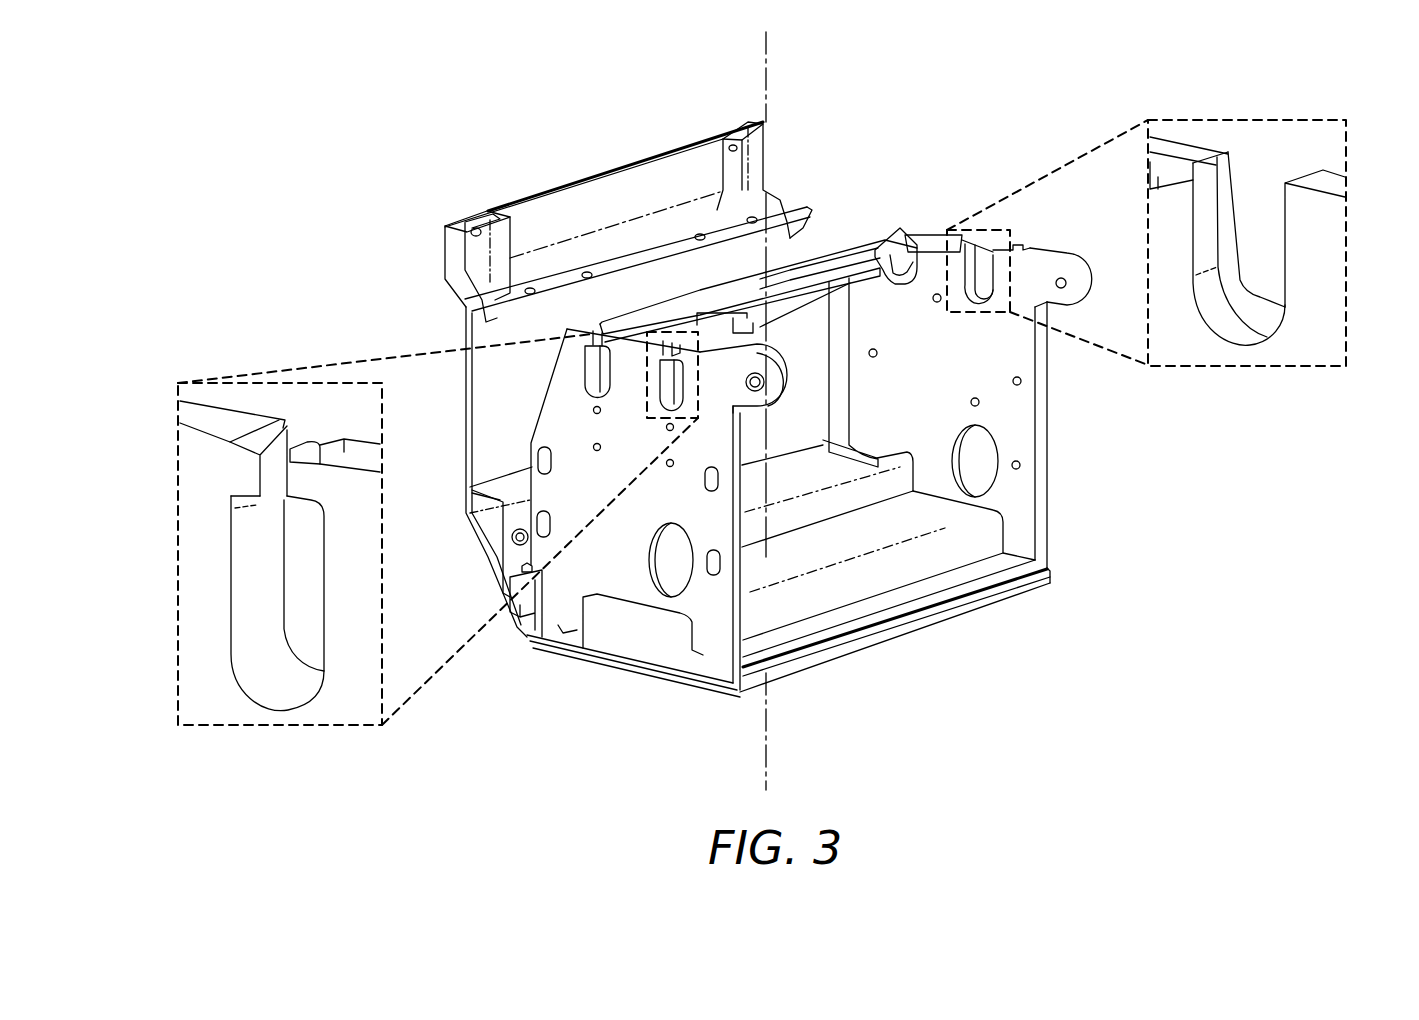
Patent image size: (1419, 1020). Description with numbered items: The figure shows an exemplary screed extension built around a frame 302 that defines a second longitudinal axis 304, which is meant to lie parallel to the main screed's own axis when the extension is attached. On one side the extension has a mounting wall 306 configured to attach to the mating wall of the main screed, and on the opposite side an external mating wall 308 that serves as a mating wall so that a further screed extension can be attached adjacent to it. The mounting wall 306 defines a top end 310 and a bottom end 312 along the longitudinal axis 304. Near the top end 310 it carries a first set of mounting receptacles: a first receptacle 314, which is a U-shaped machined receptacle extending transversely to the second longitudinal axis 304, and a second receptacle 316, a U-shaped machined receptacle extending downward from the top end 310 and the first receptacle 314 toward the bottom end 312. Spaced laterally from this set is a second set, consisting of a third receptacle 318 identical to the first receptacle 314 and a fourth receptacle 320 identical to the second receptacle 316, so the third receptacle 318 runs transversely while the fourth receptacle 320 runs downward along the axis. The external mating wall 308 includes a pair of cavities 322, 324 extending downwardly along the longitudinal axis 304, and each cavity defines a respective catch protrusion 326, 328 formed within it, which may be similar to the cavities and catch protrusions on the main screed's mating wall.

The frame 302 is at (855, 253).
The second longitudinal axis 304 is at (766, 53).
The mounting wall 306 is at (568, 603).
The external mating wall 308 is at (1020, 505).
The top end 310 is at (636, 326).
The bottom end 312 is at (619, 665).
The first receptacle 314 is at (303, 442).
The second receptacle 316 is at (275, 627).
The third receptacle 318 is at (597, 325).
The fourth receptacle 320 is at (593, 371).
The cavity 322 is at (1261, 197).
The cavity 324 is at (910, 226).
The catch protrusion 326 is at (1265, 298).
The catch protrusion 328 is at (898, 270).